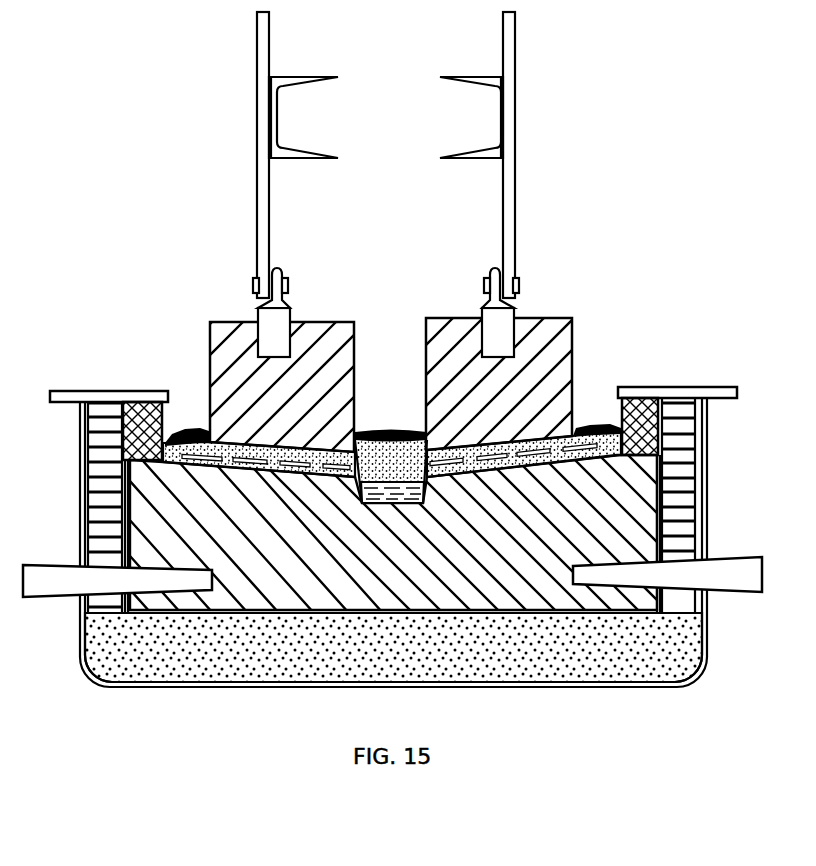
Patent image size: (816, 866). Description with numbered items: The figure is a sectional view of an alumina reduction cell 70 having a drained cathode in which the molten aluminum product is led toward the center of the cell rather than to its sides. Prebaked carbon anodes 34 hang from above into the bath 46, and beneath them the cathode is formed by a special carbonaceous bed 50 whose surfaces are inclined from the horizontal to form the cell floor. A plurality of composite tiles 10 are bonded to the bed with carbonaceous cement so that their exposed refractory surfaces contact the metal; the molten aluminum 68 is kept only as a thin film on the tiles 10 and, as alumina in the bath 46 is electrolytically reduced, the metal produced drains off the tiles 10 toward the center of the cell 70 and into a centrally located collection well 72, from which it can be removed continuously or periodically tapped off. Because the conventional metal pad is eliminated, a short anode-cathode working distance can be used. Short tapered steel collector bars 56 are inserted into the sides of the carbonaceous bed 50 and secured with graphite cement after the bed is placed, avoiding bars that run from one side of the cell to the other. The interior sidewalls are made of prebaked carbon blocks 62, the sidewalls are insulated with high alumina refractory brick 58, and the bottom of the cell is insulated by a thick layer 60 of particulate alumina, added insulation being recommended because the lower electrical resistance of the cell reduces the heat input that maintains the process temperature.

The composite tiles 10 is at (168, 437).
The prebaked carbon anodes 34 is at (318, 337).
The bath 46 is at (595, 425).
The carbonaceous bed 50 is at (364, 440).
The tapered steel collector bars 56 is at (718, 583).
The high alumina refractory brick 58 is at (688, 442).
The layer of particulate alumina 60 is at (487, 668).
The prebaked carbon blocks 62 is at (140, 413).
The molten aluminum 68 is at (383, 490).
The alumina reduction cell 70 is at (605, 348).
The collection well 72 is at (425, 500).